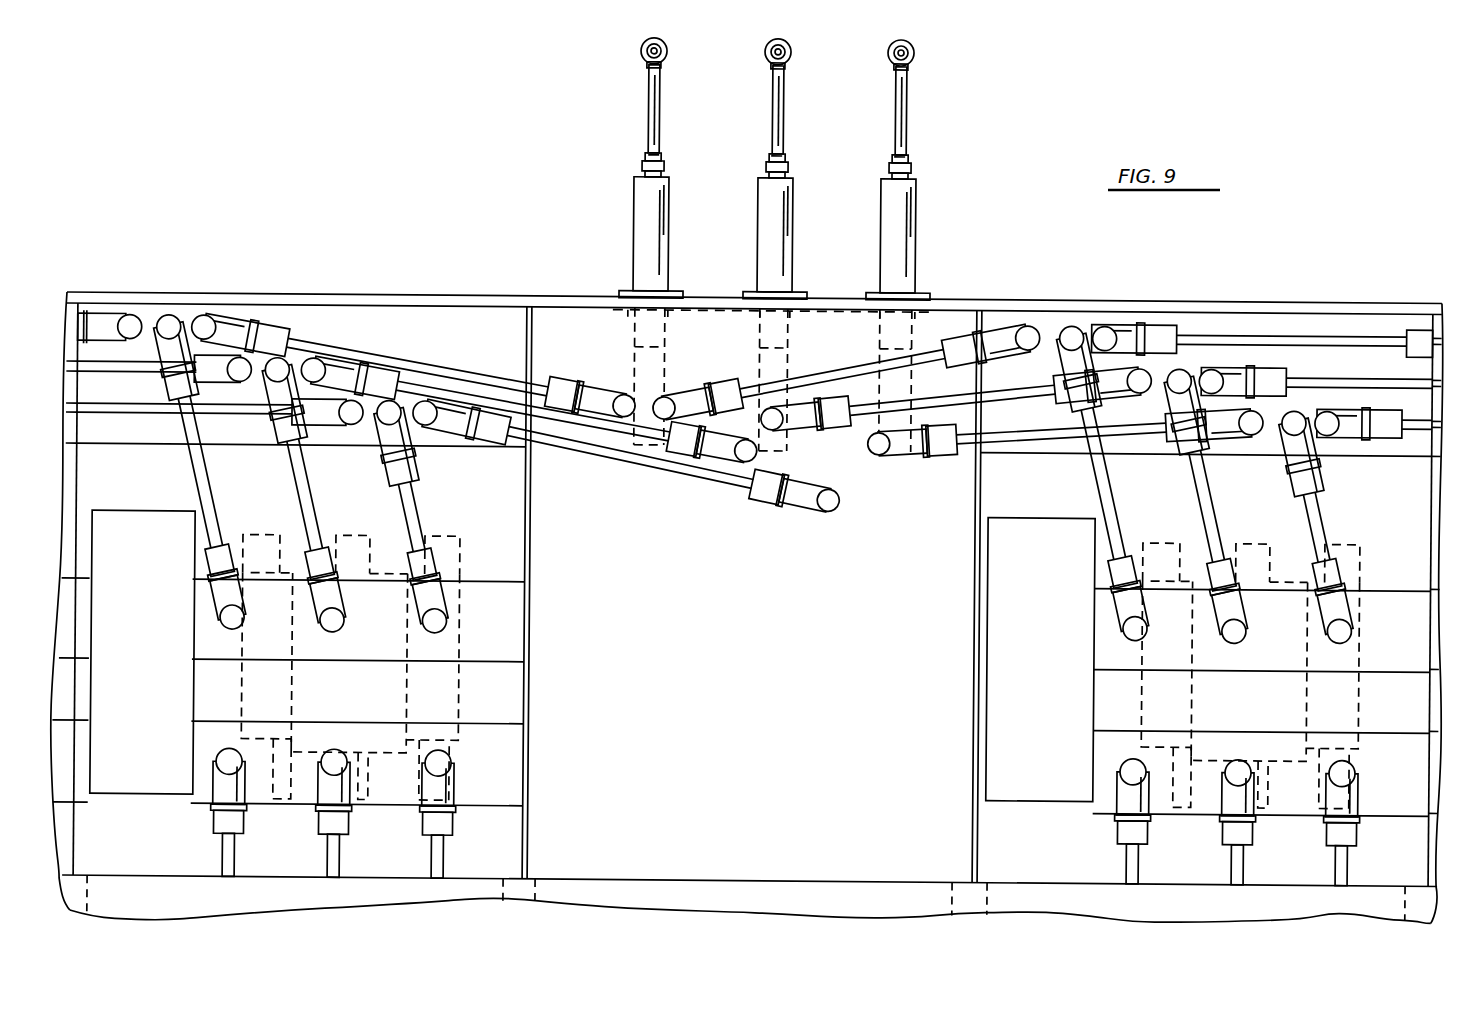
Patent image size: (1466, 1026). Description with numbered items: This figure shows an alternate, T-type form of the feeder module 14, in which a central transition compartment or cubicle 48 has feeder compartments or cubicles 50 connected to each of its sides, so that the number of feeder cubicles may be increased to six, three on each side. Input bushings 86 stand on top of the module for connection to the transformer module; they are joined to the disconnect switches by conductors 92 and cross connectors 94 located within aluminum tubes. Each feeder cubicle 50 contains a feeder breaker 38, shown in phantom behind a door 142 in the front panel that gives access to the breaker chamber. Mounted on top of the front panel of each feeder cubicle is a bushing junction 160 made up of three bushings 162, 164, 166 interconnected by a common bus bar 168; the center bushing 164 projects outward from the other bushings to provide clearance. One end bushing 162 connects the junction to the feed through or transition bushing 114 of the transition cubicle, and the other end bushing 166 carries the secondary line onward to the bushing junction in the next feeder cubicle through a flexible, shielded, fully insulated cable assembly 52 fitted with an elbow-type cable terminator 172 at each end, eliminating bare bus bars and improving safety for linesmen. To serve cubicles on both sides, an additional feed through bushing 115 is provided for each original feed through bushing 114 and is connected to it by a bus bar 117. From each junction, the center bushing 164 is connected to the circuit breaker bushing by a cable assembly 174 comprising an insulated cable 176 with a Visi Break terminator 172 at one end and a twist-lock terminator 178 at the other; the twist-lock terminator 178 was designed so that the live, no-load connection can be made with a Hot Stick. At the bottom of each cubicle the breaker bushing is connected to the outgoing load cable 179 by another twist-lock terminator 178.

The feeder module 14 is at (603, 286).
The feeder breaker 38 is at (255, 532).
The transition compartment or cubicle 48 is at (742, 666).
The feeder compartment or cubicle 50 is at (70, 292).
The flexible, shielded, insulated cable assembly 52 is at (137, 425).
The input bushing 86 is at (670, 196).
The conductor 92 is at (762, 44).
The cross connector 94 is at (658, 105).
The feed through bushing 114 is at (676, 392).
The additional feed through bushing 115 is at (618, 392).
The bus bar 117 is at (660, 378).
The door 142 is at (156, 510).
The bushing junction 160 is at (632, 322).
The end bushing 162 is at (212, 318).
The center bushing 164 is at (178, 322).
The end bushing 166 is at (130, 314).
The common bus bar 168 is at (168, 314).
The cable terminator 172 is at (96, 315).
The cable assembly 174 is at (292, 500).
The insulated cable 176 is at (290, 460).
The twist-lock terminator 178 is at (212, 595).
The load cable 179 is at (330, 851).